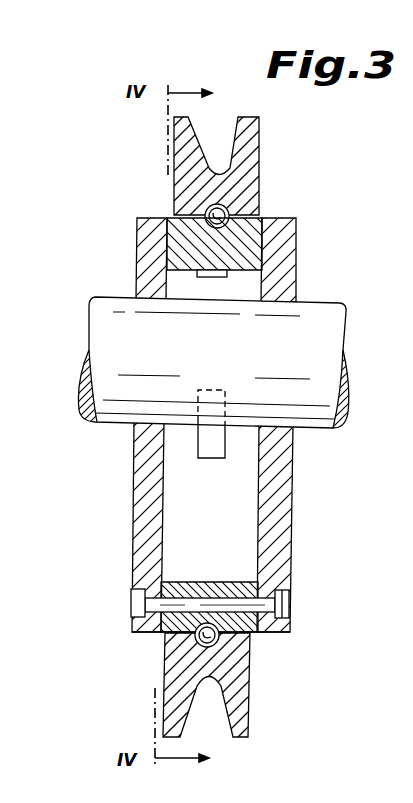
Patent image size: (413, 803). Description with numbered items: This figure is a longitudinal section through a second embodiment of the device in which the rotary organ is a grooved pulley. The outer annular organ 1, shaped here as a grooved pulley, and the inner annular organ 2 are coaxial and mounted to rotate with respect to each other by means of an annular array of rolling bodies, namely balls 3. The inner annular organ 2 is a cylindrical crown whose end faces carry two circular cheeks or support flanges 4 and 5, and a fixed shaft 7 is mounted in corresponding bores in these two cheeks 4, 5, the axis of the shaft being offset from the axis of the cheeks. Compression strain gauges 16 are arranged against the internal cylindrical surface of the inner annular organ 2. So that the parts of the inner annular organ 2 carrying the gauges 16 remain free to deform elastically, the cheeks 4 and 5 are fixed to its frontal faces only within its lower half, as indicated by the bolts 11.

The outer annular organ 1 is at (252, 146).
The inner annular organ 2 is at (178, 583).
The balls 3 is at (213, 640).
The cheek 4 is at (142, 529).
The cheek 5 is at (287, 536).
The fixed shaft 7 is at (320, 330).
The bolts 11 is at (182, 603).
The compression strain gauges 16 is at (212, 276).